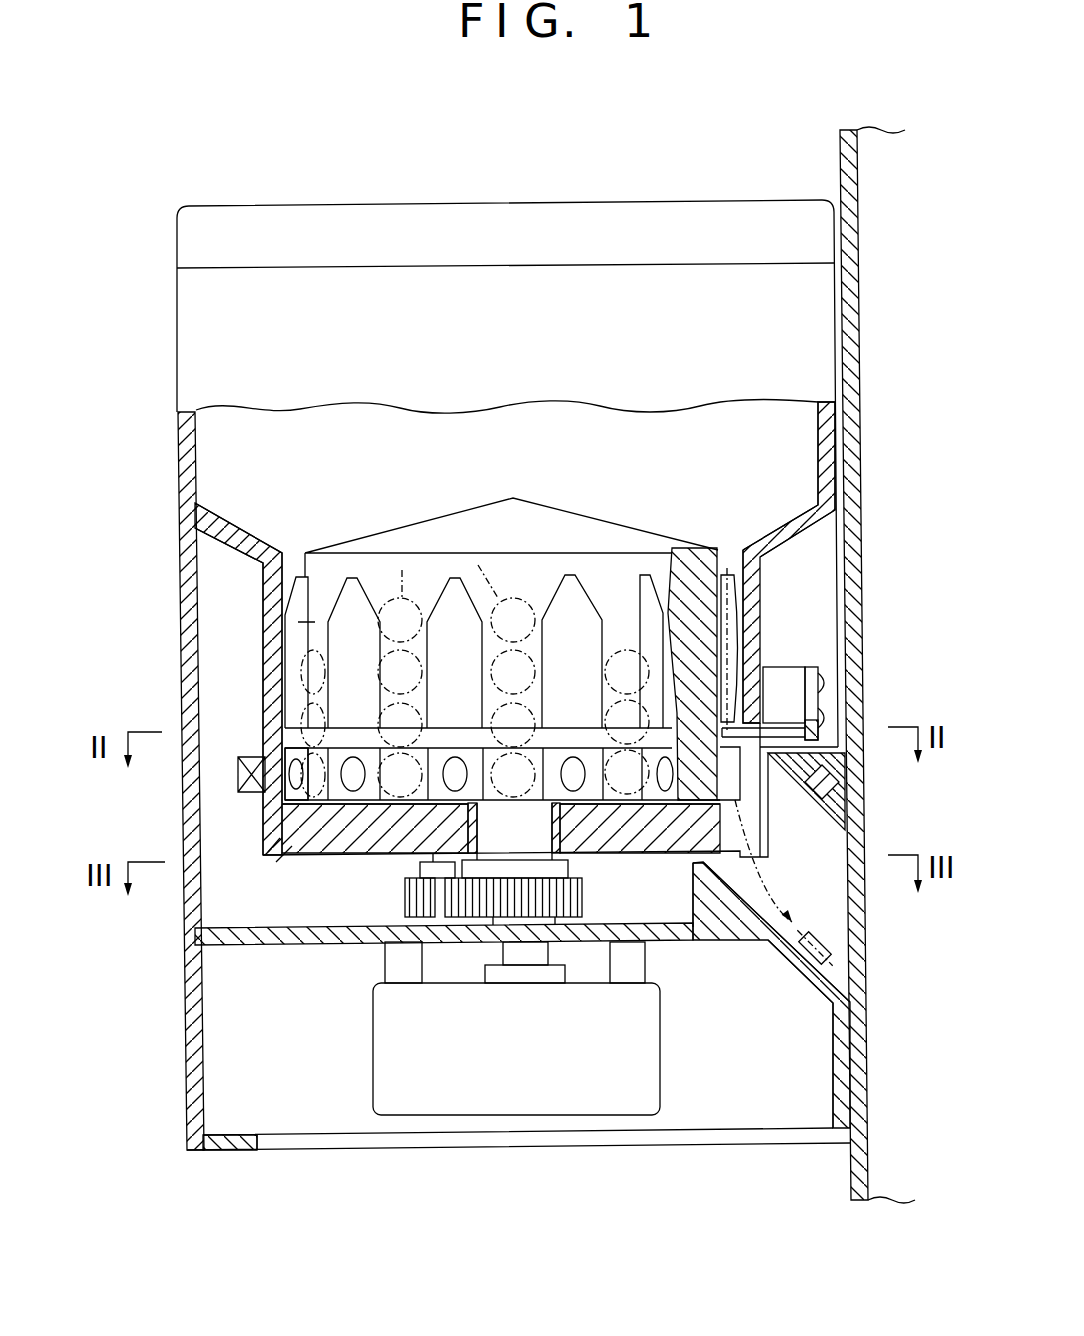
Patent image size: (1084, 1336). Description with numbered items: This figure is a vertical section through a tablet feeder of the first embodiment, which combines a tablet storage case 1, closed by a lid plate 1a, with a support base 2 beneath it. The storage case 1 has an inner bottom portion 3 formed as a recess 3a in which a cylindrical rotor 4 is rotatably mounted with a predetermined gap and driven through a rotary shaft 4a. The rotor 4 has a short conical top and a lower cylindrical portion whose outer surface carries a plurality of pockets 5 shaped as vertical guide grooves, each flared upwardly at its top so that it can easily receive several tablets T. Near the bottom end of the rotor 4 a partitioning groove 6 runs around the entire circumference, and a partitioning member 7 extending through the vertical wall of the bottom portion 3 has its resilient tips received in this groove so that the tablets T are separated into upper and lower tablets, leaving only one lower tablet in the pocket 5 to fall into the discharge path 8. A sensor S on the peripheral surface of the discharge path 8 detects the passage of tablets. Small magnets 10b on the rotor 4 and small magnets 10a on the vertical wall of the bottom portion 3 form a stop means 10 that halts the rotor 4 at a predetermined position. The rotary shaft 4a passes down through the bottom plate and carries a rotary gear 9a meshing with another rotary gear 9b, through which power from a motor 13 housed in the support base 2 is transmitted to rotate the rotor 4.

The tablet storage case 1 is at (179, 541).
The lid plate 1a is at (532, 228).
The support base 2 is at (181, 1056).
The inner bottom portion 3 is at (270, 610).
The recess 3a is at (358, 802).
The cylindrical rotor 4 is at (567, 518).
The rotary shaft 4a is at (533, 823).
The pocket 5 is at (537, 645).
The partitioning groove 6 is at (292, 735).
The partitioning member 7 is at (776, 724).
The discharge path 8 is at (838, 905).
The rotary gear 9a is at (585, 900).
The rotary gear 9b is at (405, 897).
The stop means 10 is at (229, 753).
The small magnet 10a is at (237, 775).
The small magnet 10b is at (290, 850).
The motor 13 is at (528, 1097).
The sensor S is at (848, 778).
The tablets T is at (478, 565).